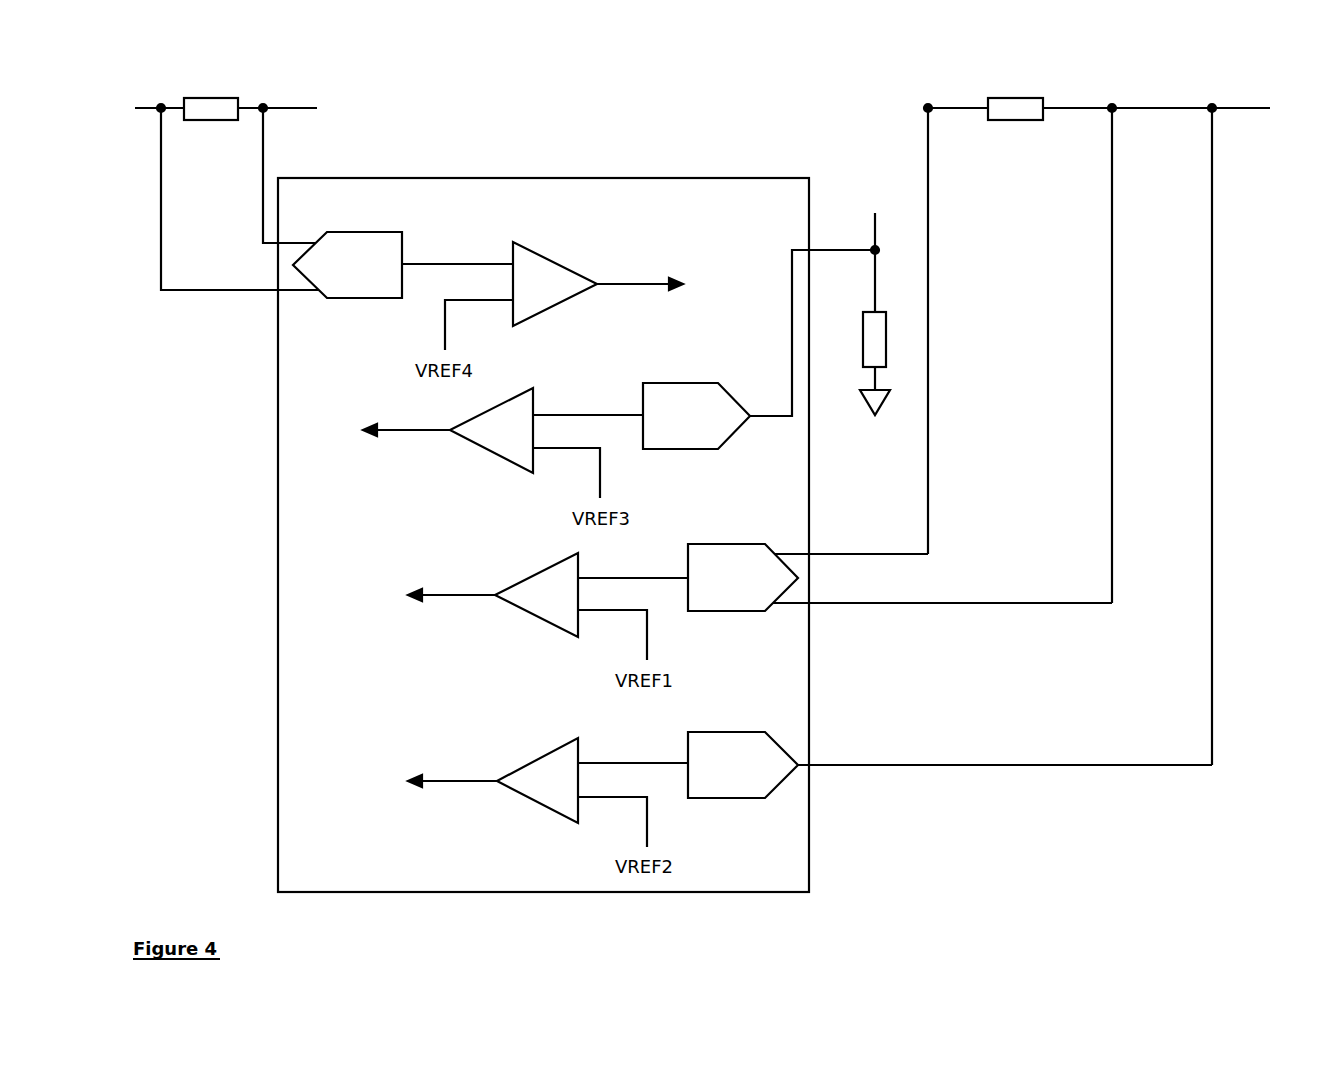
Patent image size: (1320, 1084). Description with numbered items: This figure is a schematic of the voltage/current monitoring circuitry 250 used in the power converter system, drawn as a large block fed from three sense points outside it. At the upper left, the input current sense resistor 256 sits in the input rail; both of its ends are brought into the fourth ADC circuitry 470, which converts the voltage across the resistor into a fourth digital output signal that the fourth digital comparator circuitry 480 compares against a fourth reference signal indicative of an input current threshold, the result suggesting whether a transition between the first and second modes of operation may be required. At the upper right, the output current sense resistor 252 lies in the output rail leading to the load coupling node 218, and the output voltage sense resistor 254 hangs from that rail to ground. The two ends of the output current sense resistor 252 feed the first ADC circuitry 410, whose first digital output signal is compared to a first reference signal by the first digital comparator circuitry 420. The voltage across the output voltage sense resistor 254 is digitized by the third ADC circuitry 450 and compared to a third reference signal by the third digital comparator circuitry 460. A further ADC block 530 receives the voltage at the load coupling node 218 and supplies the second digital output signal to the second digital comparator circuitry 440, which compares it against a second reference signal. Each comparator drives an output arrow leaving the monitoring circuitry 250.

The load coupling node 218 is at (1212, 108).
The voltage/current monitoring circuitry 250 is at (324, 206).
The output current sense resistor 252 is at (1005, 104).
The output voltage sense resistor 254 is at (875, 334).
The input current sense resistor 256 is at (197, 104).
The first ADC circuitry 410 is at (716, 591).
The first digital comparator circuitry 420 is at (534, 607).
The second digital comparator circuitry 440 is at (537, 792).
The third ADC circuitry 450 is at (671, 426).
The third digital comparator circuitry 460 is at (490, 441).
The fourth ADC circuitry 470 is at (343, 276).
The fourth digital comparator circuitry 480 is at (529, 294).
The amplifier 530 is at (717, 777).